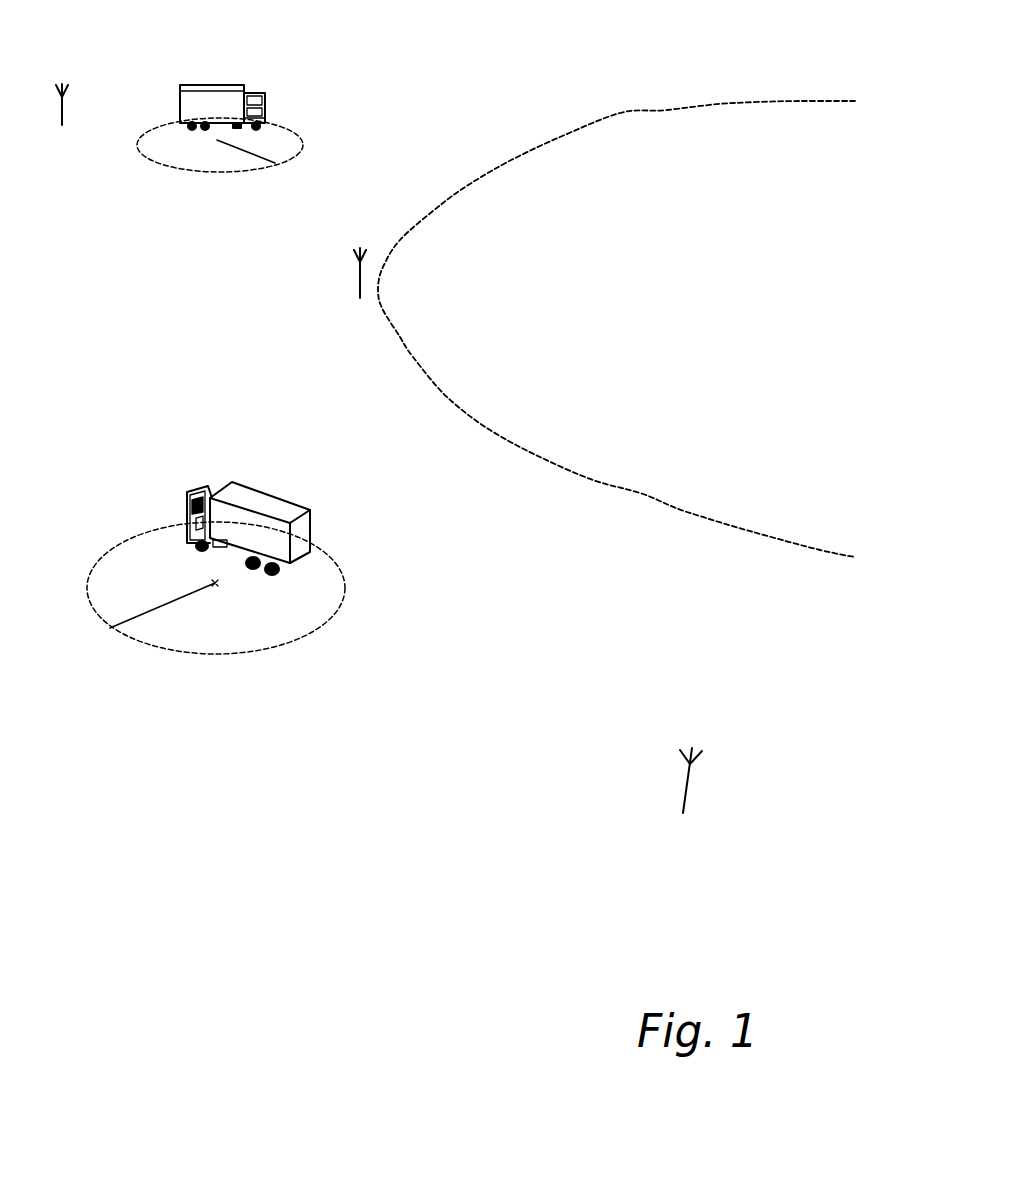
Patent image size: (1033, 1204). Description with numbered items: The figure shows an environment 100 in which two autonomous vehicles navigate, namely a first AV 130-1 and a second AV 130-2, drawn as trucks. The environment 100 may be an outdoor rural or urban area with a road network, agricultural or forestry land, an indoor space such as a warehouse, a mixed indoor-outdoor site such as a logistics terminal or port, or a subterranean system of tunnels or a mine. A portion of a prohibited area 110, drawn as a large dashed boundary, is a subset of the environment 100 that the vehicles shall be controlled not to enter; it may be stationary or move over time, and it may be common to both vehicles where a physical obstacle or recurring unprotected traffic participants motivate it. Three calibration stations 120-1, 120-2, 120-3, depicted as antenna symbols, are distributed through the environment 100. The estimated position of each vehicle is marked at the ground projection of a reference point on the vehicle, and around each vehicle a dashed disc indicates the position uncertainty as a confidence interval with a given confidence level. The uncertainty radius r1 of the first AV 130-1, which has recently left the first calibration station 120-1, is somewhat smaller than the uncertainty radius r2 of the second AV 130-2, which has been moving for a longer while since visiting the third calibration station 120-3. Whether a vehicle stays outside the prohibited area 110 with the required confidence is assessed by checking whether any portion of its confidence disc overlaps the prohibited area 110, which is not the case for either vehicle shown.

The environment 100 is at (86, 333).
The prohibited area 110 is at (623, 305).
The first calibration station 120-1 is at (64, 110).
The second calibration station 120-2 is at (360, 282).
The third calibration station 120-3 is at (689, 781).
The first autonomous vehicle 130-1 is at (233, 83).
The second autonomous vehicle 130-2 is at (270, 493).
The uncertainty radius of the first autonomous vehicle r1 is at (240, 152).
The uncertainty radius of the second autonomous vehicle r2 is at (216, 588).